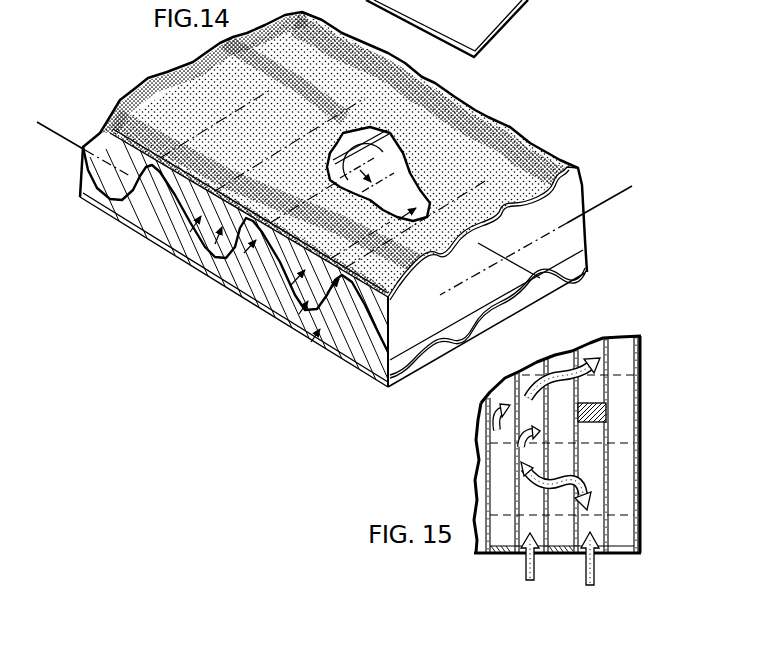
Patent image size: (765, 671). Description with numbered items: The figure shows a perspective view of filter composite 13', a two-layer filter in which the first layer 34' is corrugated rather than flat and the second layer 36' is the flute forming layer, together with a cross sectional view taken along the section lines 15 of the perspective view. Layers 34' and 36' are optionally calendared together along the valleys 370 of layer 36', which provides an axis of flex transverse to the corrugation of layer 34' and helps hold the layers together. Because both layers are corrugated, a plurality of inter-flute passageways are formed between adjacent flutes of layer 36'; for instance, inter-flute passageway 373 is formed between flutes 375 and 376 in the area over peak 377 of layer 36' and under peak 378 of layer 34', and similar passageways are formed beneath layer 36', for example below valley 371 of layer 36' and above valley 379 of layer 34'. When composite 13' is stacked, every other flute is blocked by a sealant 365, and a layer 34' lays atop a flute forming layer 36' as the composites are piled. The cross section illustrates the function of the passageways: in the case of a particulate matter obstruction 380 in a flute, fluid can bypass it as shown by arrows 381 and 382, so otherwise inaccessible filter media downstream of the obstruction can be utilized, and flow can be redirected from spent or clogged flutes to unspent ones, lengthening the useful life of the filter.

In FIG. 14, the filter composite 13' is at (333, 199).
In FIG. 14, the section lines 15— 15 is at (62, 133).
In FIG. 14, the first layer 34' is at (337, 278).
In FIG. 14, the second layer 36' is at (235, 263).
In FIG. 14, the sealant 365 is at (135, 222).
In FIG. 14, the valleys of layer 36' 370 is at (426, 100).
In FIG. 14, the valley 371 is at (324, 332).
In FIG. 14, the inter-flute passageway 373 is at (424, 128).
In FIG. 14, the flute 375 is at (335, 302).
In FIG. 14, the flute 376 is at (216, 240).
In FIG. 14, the peak 377 is at (278, 268).
In FIG. 14, the peak 378 is at (512, 209).
In FIG. 14, the valley 379 is at (462, 345).
In FIG. 15, the obstruction 380 is at (606, 408).
In FIG. 15, the arrow 381 is at (588, 495).
In FIG. 15, the arrow 382 is at (537, 365).